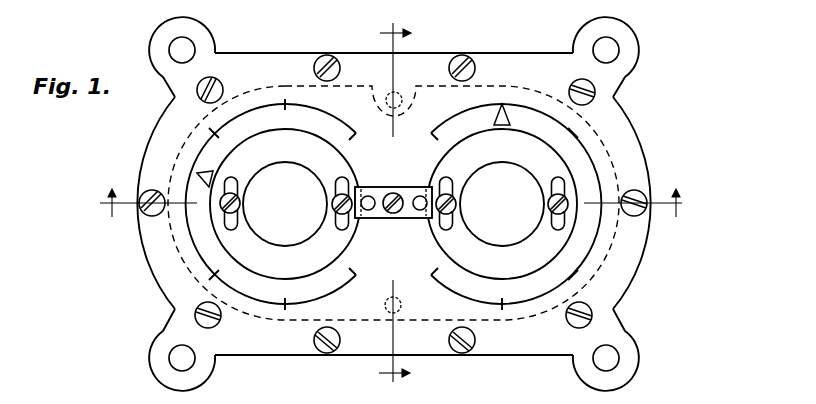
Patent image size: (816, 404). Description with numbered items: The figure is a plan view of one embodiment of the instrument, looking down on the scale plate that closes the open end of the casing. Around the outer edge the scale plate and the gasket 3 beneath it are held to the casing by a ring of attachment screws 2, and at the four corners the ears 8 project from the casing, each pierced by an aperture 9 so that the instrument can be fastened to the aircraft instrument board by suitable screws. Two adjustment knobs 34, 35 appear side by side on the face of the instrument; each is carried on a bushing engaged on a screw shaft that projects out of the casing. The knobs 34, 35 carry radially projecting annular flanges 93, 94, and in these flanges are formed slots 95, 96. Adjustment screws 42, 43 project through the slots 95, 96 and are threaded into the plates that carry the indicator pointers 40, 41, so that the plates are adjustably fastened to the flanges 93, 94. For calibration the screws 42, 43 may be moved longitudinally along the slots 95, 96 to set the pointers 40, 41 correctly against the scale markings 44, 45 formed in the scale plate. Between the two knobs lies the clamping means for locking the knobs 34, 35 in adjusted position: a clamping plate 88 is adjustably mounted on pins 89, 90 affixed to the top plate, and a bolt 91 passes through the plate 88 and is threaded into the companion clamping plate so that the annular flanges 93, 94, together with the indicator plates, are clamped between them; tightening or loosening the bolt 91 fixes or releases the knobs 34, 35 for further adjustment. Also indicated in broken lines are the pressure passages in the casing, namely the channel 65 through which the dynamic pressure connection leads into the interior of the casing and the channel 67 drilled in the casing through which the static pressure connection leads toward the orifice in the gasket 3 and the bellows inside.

The attachment screws 2 is at (490, 338).
The gasket 3 is at (395, 203).
The ears 8 is at (154, 34).
The apertures 9 is at (186, 49).
The adjustment knob 34 is at (283, 238).
The adjustment knob 35 is at (513, 168).
The indicator pointer 40 is at (196, 158).
The indicator pointer 41 is at (498, 114).
The adjustment screw 42 is at (240, 203).
The adjustment screw 43 is at (456, 207).
The scale markings 44 is at (190, 141).
The scale markings 45 is at (598, 165).
The channel 65 is at (402, 305).
The channel 67 is at (400, 94).
The clamping plate 88 is at (384, 219).
The pin 89 is at (370, 196).
The pin 90 is at (420, 211).
The bolt 91 is at (395, 193).
The annular flange 93 is at (268, 134).
The annular flange 94 is at (472, 138).
The slots 95 is at (340, 174).
The slots 96 is at (561, 177).